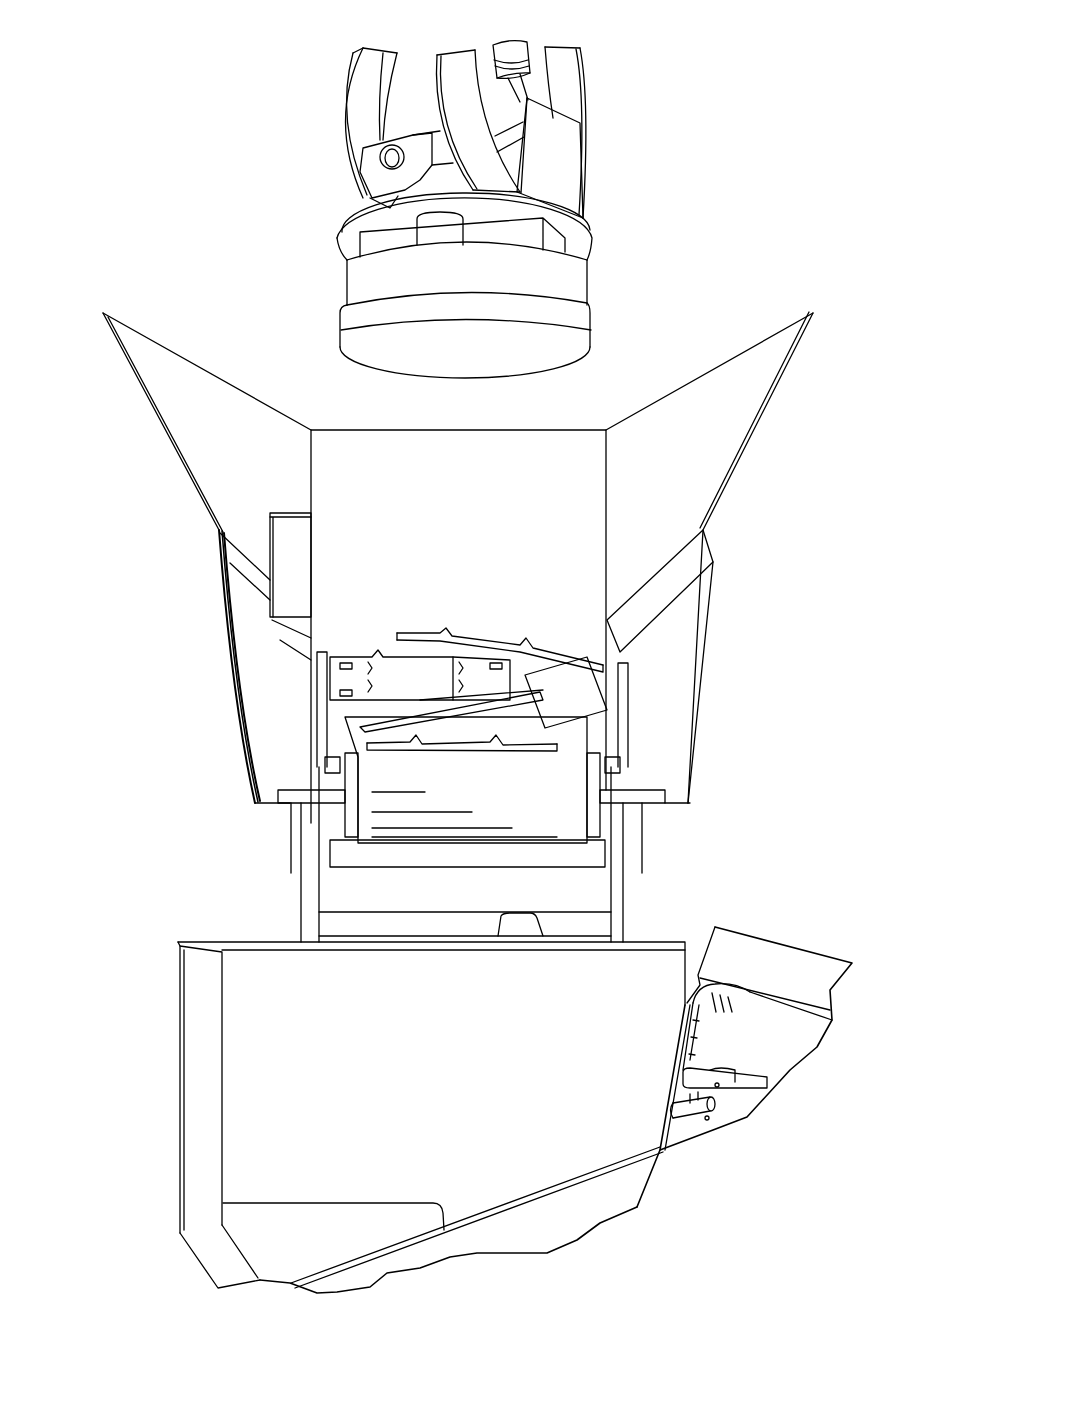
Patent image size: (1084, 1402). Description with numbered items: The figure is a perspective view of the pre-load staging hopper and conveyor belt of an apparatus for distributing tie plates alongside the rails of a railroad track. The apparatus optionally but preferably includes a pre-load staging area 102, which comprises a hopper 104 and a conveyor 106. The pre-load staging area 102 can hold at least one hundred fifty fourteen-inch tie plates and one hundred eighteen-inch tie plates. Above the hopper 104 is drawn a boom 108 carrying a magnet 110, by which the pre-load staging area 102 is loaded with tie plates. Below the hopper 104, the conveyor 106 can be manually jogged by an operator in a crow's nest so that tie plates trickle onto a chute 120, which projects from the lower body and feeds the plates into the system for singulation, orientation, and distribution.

The pre-load staging area 102 is at (252, 325).
The hopper 104 is at (638, 460).
The conveyor 106 is at (222, 817).
The boom 108 is at (585, 113).
The magnet 110 is at (345, 292).
The chute 120 is at (598, 1123).